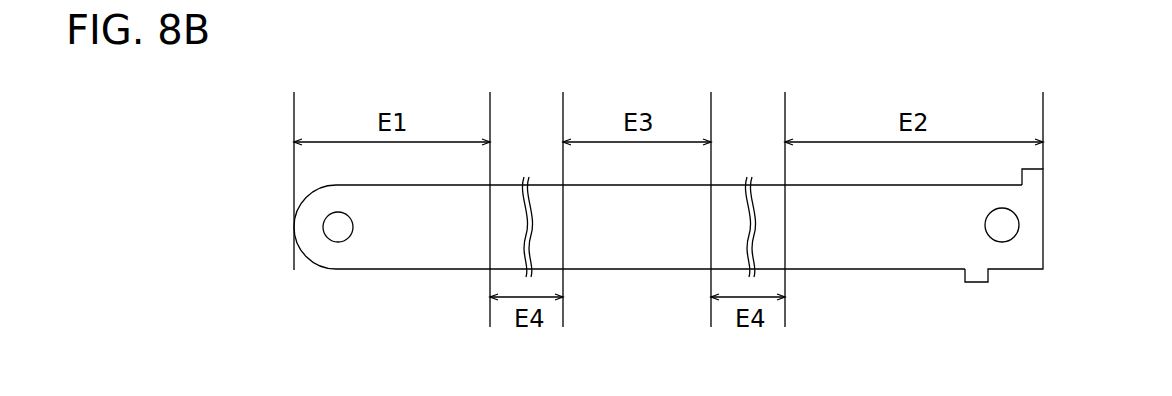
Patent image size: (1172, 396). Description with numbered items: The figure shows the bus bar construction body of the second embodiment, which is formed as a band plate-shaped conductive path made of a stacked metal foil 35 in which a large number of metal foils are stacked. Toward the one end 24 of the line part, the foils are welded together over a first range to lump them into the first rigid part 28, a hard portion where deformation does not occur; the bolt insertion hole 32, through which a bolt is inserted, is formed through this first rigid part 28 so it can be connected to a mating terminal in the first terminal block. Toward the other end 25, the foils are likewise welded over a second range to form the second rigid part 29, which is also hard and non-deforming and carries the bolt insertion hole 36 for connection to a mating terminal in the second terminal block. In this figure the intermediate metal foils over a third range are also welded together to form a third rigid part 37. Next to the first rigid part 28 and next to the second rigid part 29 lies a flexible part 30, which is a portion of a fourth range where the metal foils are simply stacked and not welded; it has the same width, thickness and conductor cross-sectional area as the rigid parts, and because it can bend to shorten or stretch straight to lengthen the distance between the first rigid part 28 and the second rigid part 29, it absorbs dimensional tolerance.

The one end 24 is at (300, 256).
The other end 25 is at (1045, 251).
The first rigid part 28 is at (425, 254).
The second rigid part 29 is at (888, 252).
The flexible part 30 is at (545, 200).
The bolt insertion hole 32 is at (337, 243).
The stacked metal foil 35 is at (814, 278).
The bolt insertion hole 36 is at (1000, 243).
The third rigid part 37 is at (630, 262).